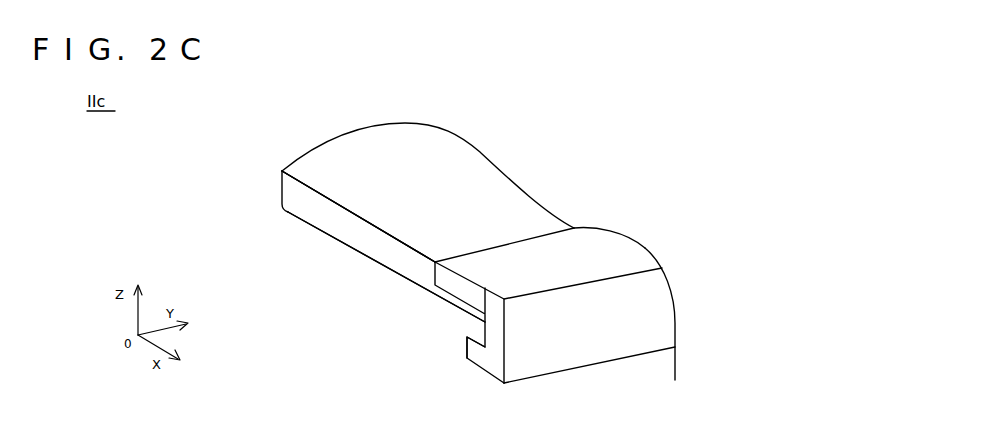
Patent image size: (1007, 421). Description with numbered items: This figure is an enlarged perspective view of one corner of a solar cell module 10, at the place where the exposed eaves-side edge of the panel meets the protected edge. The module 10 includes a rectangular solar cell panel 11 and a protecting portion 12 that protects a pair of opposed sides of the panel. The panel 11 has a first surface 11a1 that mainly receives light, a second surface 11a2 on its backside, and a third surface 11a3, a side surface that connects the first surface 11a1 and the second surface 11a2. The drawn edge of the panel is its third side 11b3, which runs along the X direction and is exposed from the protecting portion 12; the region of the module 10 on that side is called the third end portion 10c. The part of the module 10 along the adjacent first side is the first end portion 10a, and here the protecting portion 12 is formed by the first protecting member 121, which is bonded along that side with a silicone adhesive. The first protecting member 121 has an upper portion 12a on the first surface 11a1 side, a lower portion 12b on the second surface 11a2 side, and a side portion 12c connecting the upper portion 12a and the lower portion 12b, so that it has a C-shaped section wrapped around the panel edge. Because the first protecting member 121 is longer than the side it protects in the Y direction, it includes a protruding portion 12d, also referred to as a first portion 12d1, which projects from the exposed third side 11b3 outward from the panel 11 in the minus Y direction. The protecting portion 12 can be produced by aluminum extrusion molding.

The solar cell module 10 is at (335, 312).
The first end portion 10a is at (587, 327).
The third end portion 10c is at (322, 193).
The solar cell panel 11 is at (436, 134).
The first surface 11a1 is at (468, 163).
The second surface 11a2 is at (357, 249).
The third surface 11a3 is at (322, 213).
The third side 11b3 is at (351, 174).
The protecting portion 12 is at (570, 248).
The first protecting member 121 is at (556, 217).
The upper portion 12a is at (633, 252).
The lower portion 12b is at (623, 358).
The side portion 12c is at (662, 305).
The protruding portion 12d is at (478, 312).
The first portion 12d1 is at (428, 354).